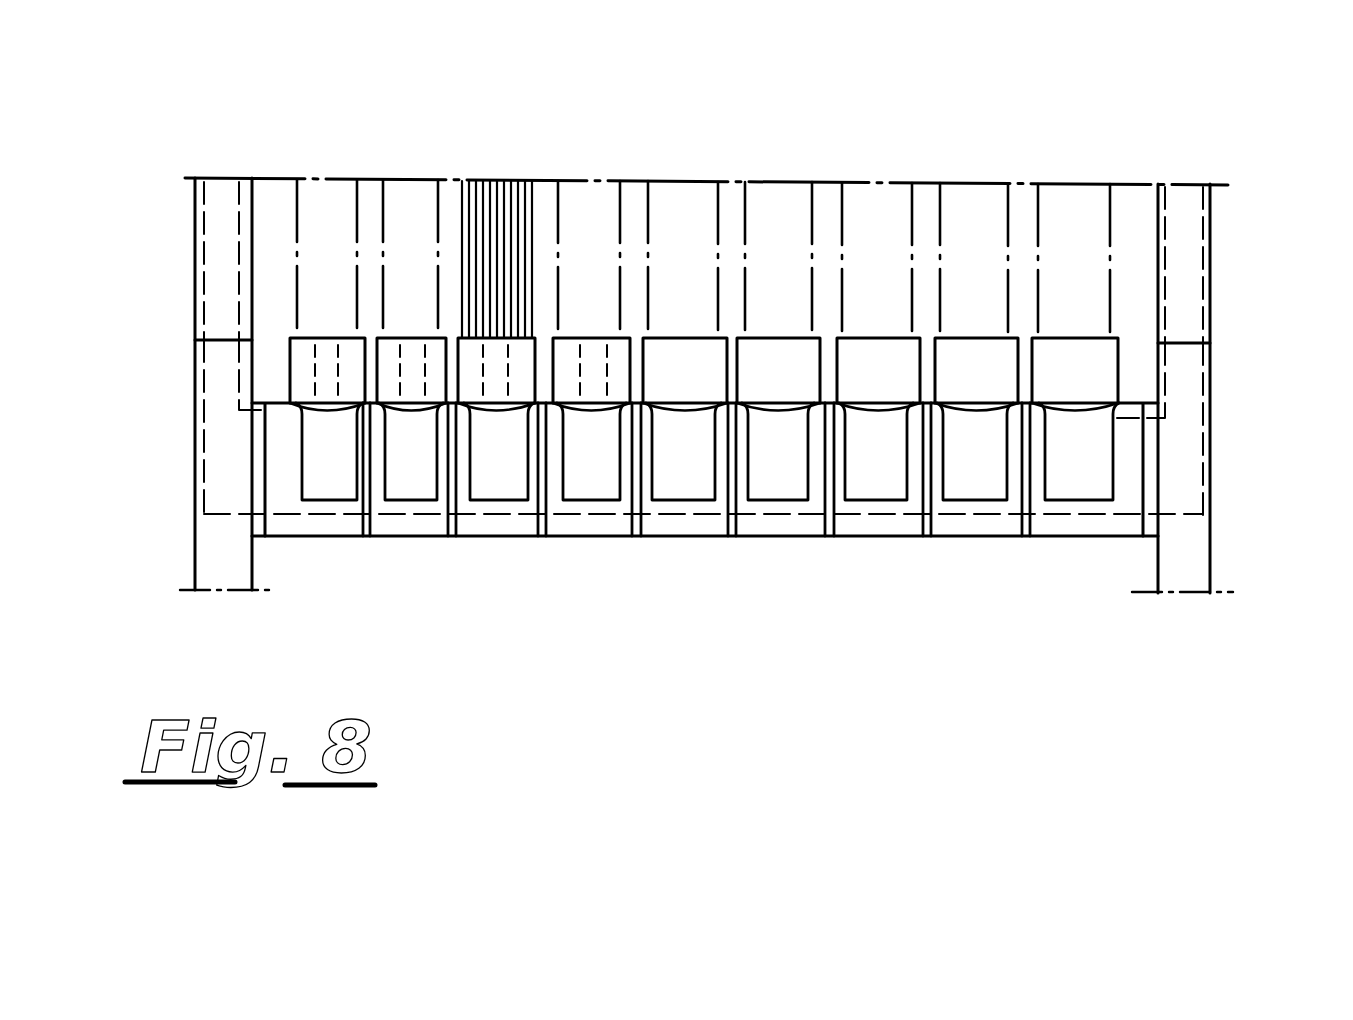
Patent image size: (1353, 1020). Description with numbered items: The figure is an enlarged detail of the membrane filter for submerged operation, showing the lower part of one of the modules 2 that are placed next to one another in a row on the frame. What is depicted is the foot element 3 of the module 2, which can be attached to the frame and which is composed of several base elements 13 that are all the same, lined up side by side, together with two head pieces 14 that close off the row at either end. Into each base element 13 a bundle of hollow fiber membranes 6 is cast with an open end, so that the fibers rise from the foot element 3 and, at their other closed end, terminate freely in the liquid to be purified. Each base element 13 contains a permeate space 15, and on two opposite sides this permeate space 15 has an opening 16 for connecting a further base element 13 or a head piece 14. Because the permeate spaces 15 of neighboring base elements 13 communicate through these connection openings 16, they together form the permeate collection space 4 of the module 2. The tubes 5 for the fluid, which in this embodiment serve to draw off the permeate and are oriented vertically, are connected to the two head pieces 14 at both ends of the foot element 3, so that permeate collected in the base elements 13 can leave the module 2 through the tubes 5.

The module 2 is at (153, 418).
The foot element 3 is at (898, 541).
The permeate collection space 4 is at (347, 512).
The tube 5 is at (199, 247).
The hollow fiber membrane 6 is at (466, 218).
The base element 13 is at (690, 528).
The head piece 14 is at (193, 535).
The permeate space 15 is at (497, 443).
The opening 16 is at (452, 478).